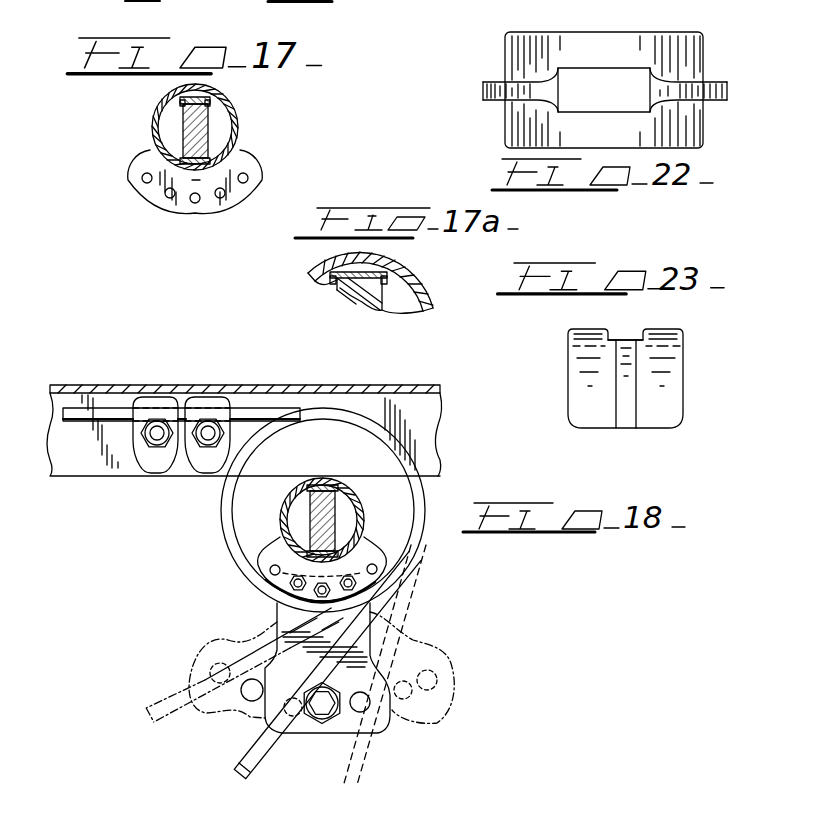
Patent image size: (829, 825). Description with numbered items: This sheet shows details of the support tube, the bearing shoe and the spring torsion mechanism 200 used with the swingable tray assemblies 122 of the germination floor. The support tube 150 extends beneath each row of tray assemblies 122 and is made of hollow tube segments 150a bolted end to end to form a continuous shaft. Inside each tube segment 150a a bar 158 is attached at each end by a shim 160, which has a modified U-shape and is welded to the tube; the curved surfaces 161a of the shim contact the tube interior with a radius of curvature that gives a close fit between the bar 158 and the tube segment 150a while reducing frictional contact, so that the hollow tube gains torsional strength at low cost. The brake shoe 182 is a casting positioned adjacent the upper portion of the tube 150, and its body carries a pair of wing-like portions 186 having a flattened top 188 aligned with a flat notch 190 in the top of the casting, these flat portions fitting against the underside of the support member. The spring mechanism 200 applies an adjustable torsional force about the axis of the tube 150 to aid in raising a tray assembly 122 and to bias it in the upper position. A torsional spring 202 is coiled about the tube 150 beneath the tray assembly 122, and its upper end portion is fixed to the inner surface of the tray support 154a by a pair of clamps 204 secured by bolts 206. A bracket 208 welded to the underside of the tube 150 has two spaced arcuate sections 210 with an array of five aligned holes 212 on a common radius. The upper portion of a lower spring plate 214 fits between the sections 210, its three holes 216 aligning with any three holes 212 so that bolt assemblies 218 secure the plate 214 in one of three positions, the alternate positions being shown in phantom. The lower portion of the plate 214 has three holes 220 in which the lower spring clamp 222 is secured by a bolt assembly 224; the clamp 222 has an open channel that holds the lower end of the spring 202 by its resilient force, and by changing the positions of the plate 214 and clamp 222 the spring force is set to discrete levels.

In FIG. 18, the tray assembly 122 is at (412, 395).
In FIG. 17, the support tube 150 is at (238, 122).
In FIG. 18, the support tube 150 is at (347, 483).
In FIG. 17, the tube segment 150a is at (158, 128).
In FIG. 17A, the tube segment 150a is at (418, 283).
In FIG. 18, the tray support 154a is at (432, 438).
In FIG. 17, the bar 158 is at (198, 130).
In FIG. 17A, the bar 158 is at (360, 290).
In FIG. 18, the bar 158 is at (318, 520).
In FIG. 17, the shim 160 is at (197, 91).
In FIG. 17A, the shim 160 is at (390, 274).
In FIG. 18, the shim 160 is at (312, 489).
In FIG. 17, the curved surface 161a is at (183, 102).
In FIG. 17A, the curved surface 161a is at (330, 274).
In FIG. 22, the brake shoe 182 is at (708, 88).
In FIG. 23, the brake shoe 182 is at (567, 385).
In FIG. 22, the wing-like portion 186 is at (492, 83).
In FIG. 23, the wing-like portion 186 is at (625, 410).
In FIG. 22, the flattened top 188 is at (511, 103).
In FIG. 23, the flattened top 188 is at (634, 340).
In FIG. 23, the flat notch 190 is at (611, 334).
In FIG. 18, the spring torsion mechanism 200 is at (424, 561).
In FIG. 18, the torsional spring 202 is at (318, 408).
In FIG. 18, the clamp 204 is at (153, 398).
In FIG. 18, the bolt 206 is at (208, 444).
In FIG. 17, the bracket 208 is at (197, 217).
In FIG. 18, the bracket 208 is at (280, 594).
In FIG. 17, the arcuate section 210 is at (222, 199).
In FIG. 18, the arcuate section 210 is at (371, 558).
In FIG. 17, the hole 212 is at (146, 184).
In FIG. 18, the hole 212 is at (378, 569).
In FIG. 18, the lower spring plate 214 is at (378, 723).
In FIG. 18, the hole 216 is at (268, 584).
In FIG. 18, the bolt assembly 218 is at (368, 588).
In FIG. 18, the hole 220 is at (364, 700).
In FIG. 18, the lower spring clamp 222 is at (302, 725).
In FIG. 18, the bolt assembly 224 is at (327, 718).